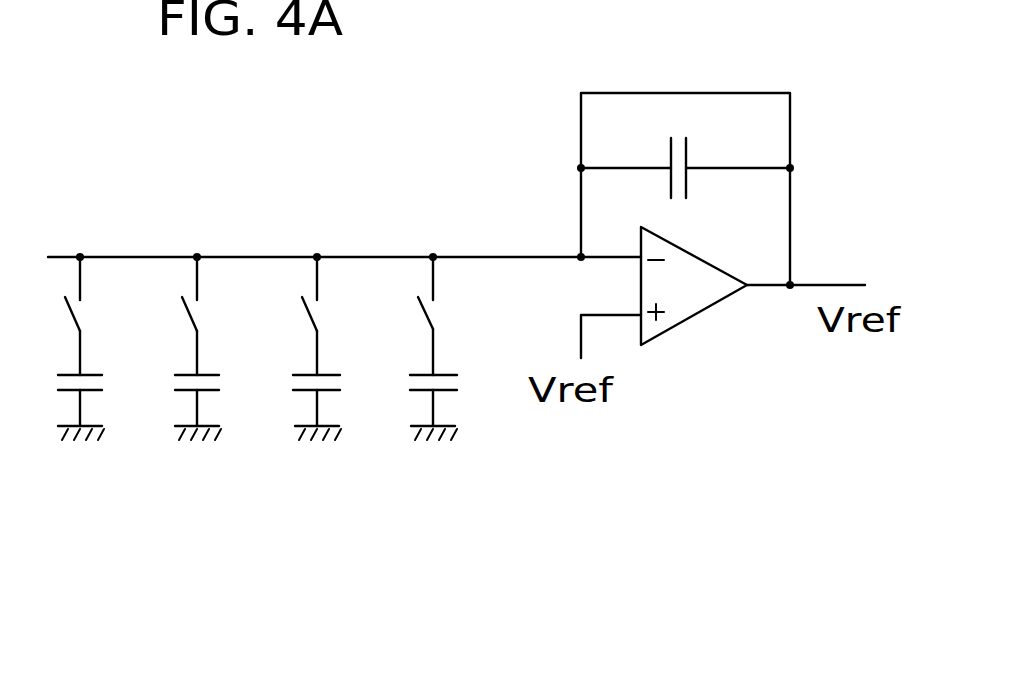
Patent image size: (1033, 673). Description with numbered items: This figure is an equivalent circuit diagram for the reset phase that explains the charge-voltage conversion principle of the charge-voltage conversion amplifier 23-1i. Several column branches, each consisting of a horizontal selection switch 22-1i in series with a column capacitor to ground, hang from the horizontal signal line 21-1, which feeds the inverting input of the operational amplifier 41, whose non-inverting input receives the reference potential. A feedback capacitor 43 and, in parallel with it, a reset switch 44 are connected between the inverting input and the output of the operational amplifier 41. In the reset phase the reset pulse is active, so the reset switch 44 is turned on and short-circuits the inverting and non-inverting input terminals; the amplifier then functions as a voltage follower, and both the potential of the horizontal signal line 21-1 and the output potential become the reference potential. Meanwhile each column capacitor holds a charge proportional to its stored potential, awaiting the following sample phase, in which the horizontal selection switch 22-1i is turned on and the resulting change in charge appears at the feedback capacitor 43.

The horizontal signal line 21-1 is at (138, 251).
The horizontal selection switch 22-1i is at (327, 308).
The charge-voltage conversion amplifier 23-1i is at (283, 383).
The operational amplifier 41 is at (702, 310).
The feedback capacitor 43 is at (680, 143).
The reset switch 44 is at (680, 89).